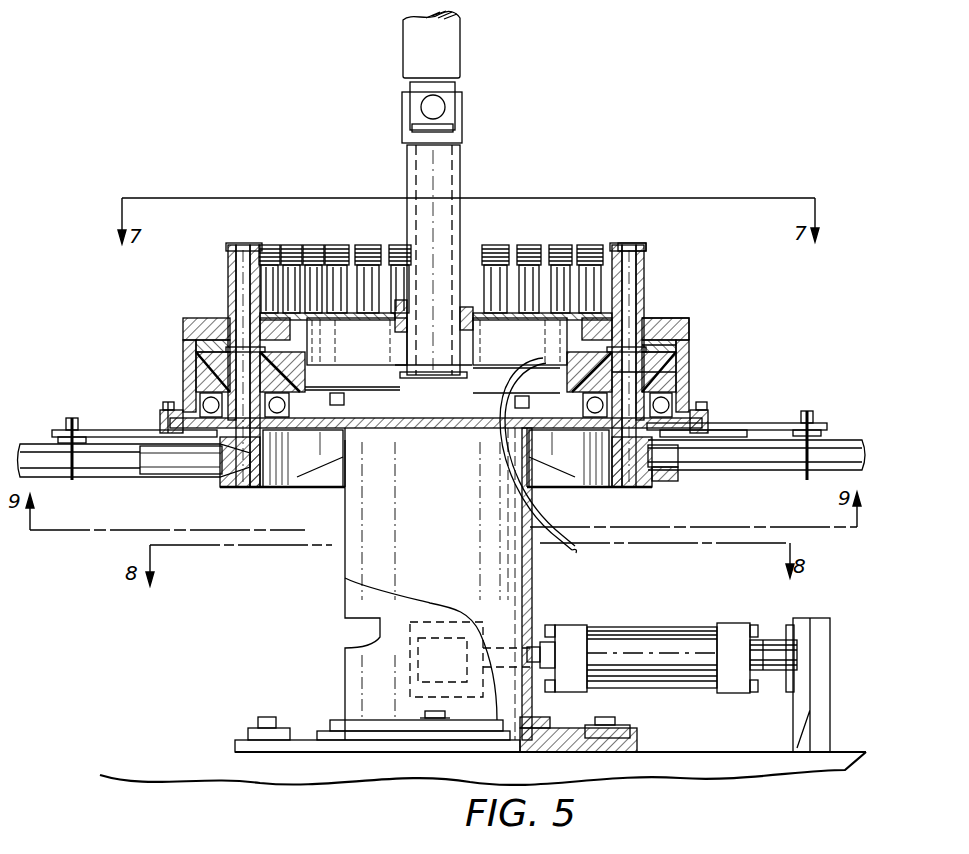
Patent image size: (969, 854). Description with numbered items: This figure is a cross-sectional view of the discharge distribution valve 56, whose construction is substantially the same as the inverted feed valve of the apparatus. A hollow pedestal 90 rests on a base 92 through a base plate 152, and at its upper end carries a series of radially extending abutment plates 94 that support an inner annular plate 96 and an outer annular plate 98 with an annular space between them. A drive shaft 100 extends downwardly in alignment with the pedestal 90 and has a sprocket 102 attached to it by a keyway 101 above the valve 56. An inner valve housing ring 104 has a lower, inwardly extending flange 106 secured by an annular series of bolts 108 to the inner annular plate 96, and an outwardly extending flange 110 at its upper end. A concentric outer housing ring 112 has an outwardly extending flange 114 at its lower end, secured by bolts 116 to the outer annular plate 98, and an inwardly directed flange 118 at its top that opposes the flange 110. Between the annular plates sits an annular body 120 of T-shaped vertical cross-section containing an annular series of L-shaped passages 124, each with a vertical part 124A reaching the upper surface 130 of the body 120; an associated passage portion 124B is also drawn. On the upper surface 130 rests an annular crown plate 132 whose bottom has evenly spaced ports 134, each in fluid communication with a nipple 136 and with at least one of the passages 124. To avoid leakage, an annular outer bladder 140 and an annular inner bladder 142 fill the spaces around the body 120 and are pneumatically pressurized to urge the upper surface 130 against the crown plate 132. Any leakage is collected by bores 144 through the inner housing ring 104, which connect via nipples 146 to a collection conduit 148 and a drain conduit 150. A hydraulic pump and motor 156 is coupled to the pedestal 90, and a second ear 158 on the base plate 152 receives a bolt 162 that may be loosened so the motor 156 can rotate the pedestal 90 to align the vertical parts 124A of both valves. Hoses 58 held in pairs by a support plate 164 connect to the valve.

The discharge distribution valve 56 is at (752, 362).
The hoses 58 is at (108, 478).
The pedestal 90 is at (535, 617).
The base 92 is at (636, 741).
The abutment plates 94 is at (336, 488).
The inner annular plate 96 is at (308, 448).
The outer annular plate 98 is at (178, 470).
The drive shaft 100 is at (459, 212).
The keyway 101 is at (497, 256).
The sprocket 102 is at (466, 318).
The inner valve housing ring 104 is at (312, 343).
The lower inwardly extending flange 106 is at (352, 430).
The bolts 108 is at (312, 388).
The outwardly extending flange 110 is at (290, 312).
The outer housing ring 112 is at (198, 370).
The outwardly extending flange 114 is at (178, 410).
The bolts 116 is at (162, 412).
The inwardly directed flange 118 is at (210, 318).
The annular body 120 is at (650, 485).
The L-shaped passages 124 is at (248, 484).
The vertical part of passage 124A is at (690, 374).
The housing portion 124B is at (608, 489).
The upper surface 130 is at (688, 350).
The annular crown plate 132 is at (686, 322).
The ports 134 is at (198, 345).
The nipple 136 is at (642, 257).
The annular outer bladder 140 is at (700, 402).
The annular inner bladder 142 is at (598, 462).
The bores 144 is at (532, 370).
The nipples 146 is at (540, 387).
The collection conduit 148 is at (405, 373).
The drain conduit 150 is at (576, 556).
The base plate 152 is at (540, 718).
The hydraulic pump and motor 156 is at (650, 625).
The second ear 158 is at (495, 720).
The bolt 162 is at (428, 711).
The support plate 164 is at (88, 428).